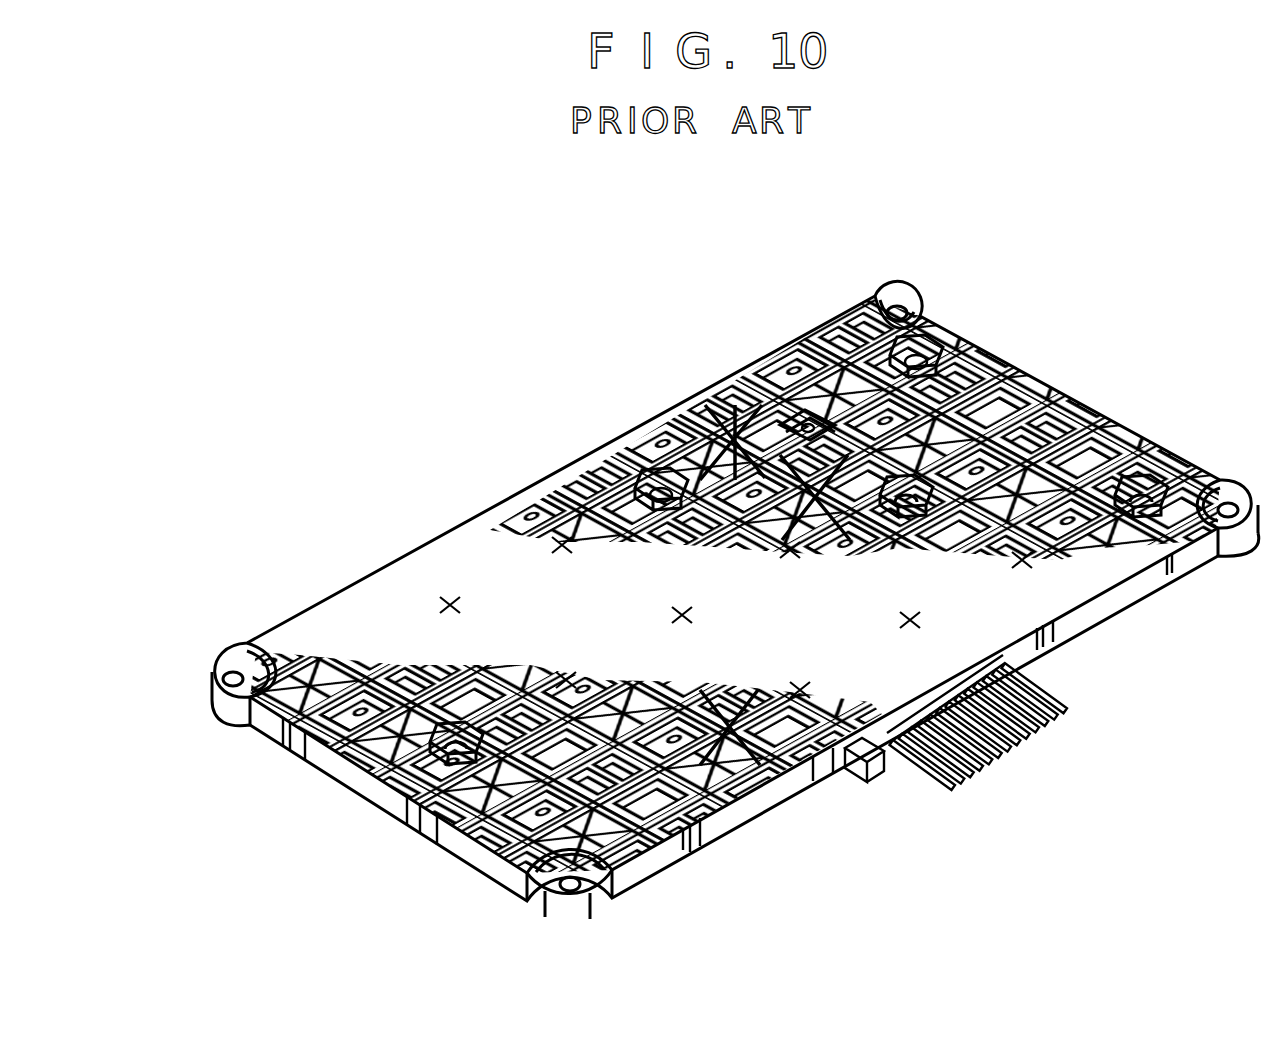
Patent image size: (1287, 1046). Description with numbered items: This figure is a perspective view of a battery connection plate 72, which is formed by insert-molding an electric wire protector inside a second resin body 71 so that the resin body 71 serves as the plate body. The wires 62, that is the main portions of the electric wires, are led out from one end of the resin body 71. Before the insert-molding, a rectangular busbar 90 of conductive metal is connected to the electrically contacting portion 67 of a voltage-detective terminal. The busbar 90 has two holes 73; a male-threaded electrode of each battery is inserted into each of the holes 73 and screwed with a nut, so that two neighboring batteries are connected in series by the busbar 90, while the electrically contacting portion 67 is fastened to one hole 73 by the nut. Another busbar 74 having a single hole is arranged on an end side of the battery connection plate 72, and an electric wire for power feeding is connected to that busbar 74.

The wires 62 is at (1043, 692).
The electrically contacting portion 67 is at (800, 426).
The second resin body 71 is at (388, 613).
The battery connection plate 72 is at (516, 443).
The holes 73 is at (683, 492).
The busbar 74 is at (917, 358).
The busbar 90 is at (660, 487).